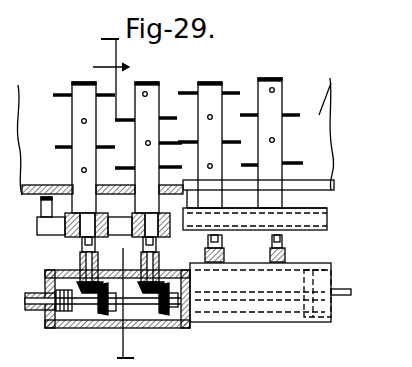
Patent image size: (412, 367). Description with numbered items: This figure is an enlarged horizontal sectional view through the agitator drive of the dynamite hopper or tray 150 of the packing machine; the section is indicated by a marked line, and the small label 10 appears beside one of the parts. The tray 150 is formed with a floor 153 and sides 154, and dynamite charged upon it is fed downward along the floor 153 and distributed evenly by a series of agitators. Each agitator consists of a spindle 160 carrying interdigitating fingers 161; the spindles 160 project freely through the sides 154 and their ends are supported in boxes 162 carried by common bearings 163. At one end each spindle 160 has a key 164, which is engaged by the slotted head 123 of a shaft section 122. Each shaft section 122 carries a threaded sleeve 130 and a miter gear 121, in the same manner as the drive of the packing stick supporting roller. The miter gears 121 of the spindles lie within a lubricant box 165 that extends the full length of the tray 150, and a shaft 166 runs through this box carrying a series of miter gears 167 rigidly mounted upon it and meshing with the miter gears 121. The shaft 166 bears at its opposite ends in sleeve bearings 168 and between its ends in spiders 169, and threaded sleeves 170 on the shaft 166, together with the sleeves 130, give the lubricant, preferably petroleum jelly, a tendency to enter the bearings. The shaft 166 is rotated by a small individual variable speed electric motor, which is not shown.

The indicator 10 is at (51, 216).
The miter gear 121 is at (90, 318).
The shaft section 122 is at (79, 262).
The slotted head 123 is at (162, 240).
The threaded sleeve 130 is at (45, 275).
The hopper or tray 150 is at (176, 132).
The floor 153 is at (331, 95).
The sides 154 is at (334, 184).
The spindle 160 is at (150, 82).
The interdigitating fingers 161 is at (53, 96).
The box 162 is at (78, 238).
The common bearing 163 is at (130, 230).
The key 164 is at (95, 243).
The lubricant box 165 is at (172, 320).
The shaft 166 is at (341, 290).
The miter gear 167 is at (183, 320).
The sleeve bearing 168 is at (36, 312).
The spider 169 is at (213, 320).
The threaded sleeve 170 is at (68, 318).